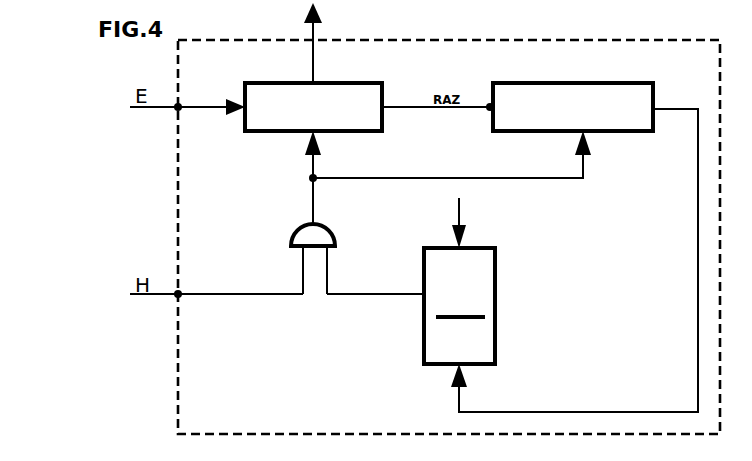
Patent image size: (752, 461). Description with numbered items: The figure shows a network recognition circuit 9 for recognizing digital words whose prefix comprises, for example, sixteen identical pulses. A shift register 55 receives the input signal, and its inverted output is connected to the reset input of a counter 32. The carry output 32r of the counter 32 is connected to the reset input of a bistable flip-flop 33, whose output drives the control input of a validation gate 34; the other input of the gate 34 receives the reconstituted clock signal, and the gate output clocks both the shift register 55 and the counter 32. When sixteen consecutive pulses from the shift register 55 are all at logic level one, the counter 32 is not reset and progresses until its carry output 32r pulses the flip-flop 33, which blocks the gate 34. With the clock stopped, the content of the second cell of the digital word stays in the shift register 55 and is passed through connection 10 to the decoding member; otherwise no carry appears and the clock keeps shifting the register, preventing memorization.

The network recognition circuit 9 is at (682, 40).
The connection 10 is at (312, 24).
The shift register 55 is at (383, 84).
The counter 32 is at (493, 84).
The carry output 32r is at (698, 263).
The bistable flip-flop 33 is at (424, 248).
The validation gate 34 is at (337, 240).